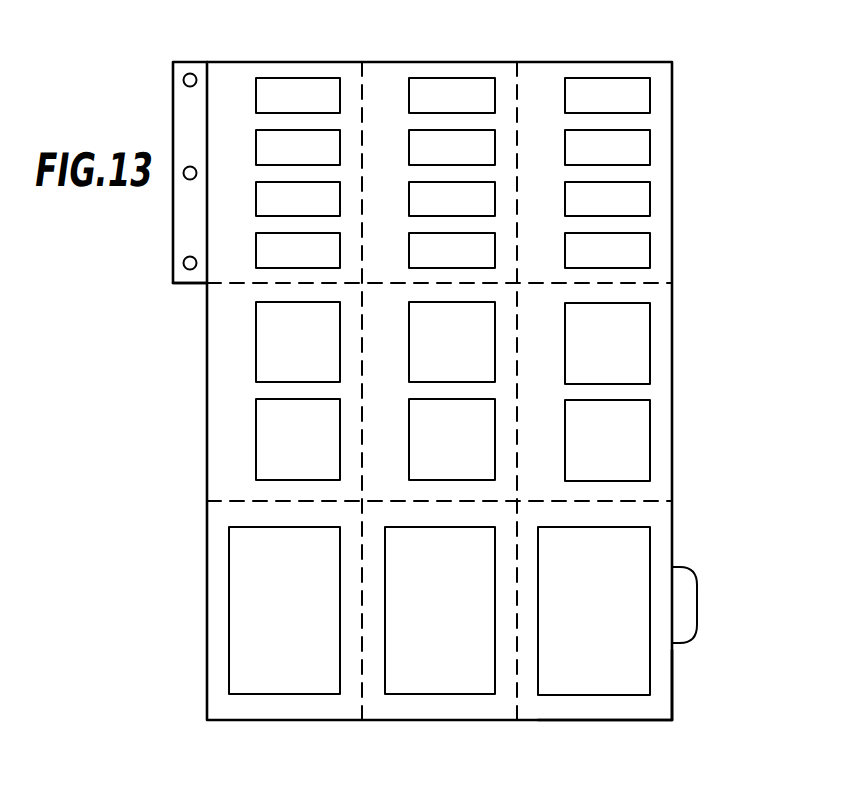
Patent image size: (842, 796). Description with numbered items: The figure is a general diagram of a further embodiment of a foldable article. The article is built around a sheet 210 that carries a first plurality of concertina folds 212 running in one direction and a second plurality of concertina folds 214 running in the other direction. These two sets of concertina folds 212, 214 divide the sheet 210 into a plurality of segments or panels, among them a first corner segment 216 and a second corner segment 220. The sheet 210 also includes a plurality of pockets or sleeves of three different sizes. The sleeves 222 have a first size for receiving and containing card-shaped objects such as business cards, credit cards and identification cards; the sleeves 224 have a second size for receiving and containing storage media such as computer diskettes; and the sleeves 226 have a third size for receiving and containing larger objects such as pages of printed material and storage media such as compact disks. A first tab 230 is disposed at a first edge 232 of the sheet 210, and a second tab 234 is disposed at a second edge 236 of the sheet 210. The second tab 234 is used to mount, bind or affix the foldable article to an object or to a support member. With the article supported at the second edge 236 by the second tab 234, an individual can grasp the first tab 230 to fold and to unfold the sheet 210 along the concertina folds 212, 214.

The sheet 210 is at (208, 694).
The first plurality of concertina folds 212 is at (232, 285).
The second plurality of concertina folds 214 is at (363, 698).
The first corner segment 216 is at (633, 710).
The second corner segment 220 is at (217, 73).
The sleeves 222 is at (256, 250).
The sleeves 224 is at (410, 333).
The sleeves 226 is at (229, 576).
The first tab 230 is at (697, 605).
The first edge 232 is at (673, 682).
The second tab 234 is at (178, 61).
The second edge 236 is at (207, 302).